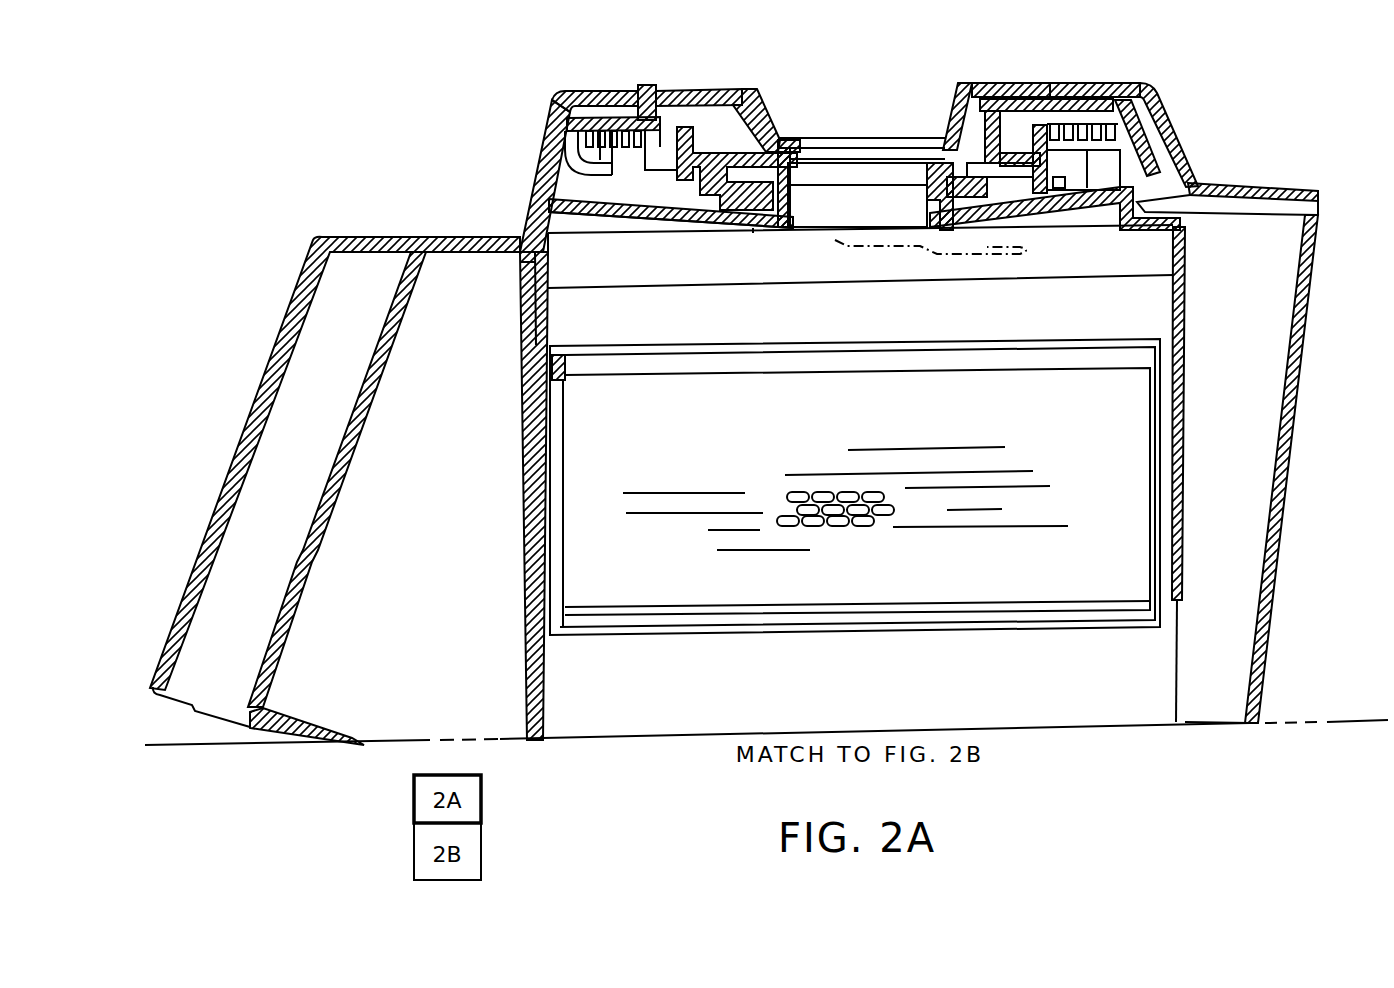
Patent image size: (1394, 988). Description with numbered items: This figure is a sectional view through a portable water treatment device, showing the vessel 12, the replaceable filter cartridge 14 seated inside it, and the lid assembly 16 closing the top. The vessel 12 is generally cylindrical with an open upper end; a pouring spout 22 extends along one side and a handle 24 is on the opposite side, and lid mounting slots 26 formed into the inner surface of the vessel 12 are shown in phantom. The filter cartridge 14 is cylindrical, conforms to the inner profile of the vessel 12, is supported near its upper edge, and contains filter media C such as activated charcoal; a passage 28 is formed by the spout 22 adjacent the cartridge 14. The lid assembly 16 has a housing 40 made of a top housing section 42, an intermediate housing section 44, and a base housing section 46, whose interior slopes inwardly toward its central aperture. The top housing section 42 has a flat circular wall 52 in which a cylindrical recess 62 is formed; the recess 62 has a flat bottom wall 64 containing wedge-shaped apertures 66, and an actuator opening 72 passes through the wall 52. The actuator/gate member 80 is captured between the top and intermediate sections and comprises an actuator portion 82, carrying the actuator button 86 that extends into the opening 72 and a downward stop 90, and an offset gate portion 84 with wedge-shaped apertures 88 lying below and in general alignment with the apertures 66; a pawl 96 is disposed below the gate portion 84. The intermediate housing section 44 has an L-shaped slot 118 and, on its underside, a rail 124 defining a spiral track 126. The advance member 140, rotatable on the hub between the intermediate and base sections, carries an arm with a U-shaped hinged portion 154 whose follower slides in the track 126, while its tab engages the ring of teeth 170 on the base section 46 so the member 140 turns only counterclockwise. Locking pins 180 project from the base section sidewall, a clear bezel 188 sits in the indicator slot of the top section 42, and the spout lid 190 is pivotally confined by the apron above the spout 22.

The vessel 12 is at (522, 630).
The replaceable filter cartridge 14 is at (1186, 388).
The lid assembly 16 is at (1183, 70).
The pouring spout 22 is at (1298, 393).
The handle 24 is at (242, 428).
The lid mounting slots 26 is at (520, 262).
The passage 28 is at (1238, 450).
The housing 40 is at (547, 129).
The top housing section 42 is at (575, 98).
The intermediate housing section 44 is at (552, 204).
The base housing section 46 is at (643, 230).
The flat circular wall 52 is at (688, 90).
The cylindrical recess 62 is at (852, 107).
The flat bottom wall 64 is at (800, 138).
The wedge-shaped apertures 66 is at (893, 138).
The actuator opening 72 is at (1040, 97).
The actuator/gate member 80 is at (950, 83).
The actuator portion 82 is at (1027, 83).
The gate portion 84 is at (712, 90).
The actuator button 86 is at (1077, 83).
The wedge-shaped apertures 88 is at (843, 160).
The stop 90 is at (1165, 125).
The pawl 96 is at (735, 226).
The L-shaped slot 118 is at (663, 153).
The rail 124 is at (557, 140).
The spiral track 126 is at (554, 180).
The advance member 140 is at (1007, 212).
The U-shaped coil or hinged portion 154 is at (1107, 200).
The annular ring of teeth 170 is at (755, 233).
The locking pins 180 is at (550, 254).
The clear bezel 188 is at (648, 88).
The spout lid 190 is at (1258, 180).
The filter media C is at (801, 490).